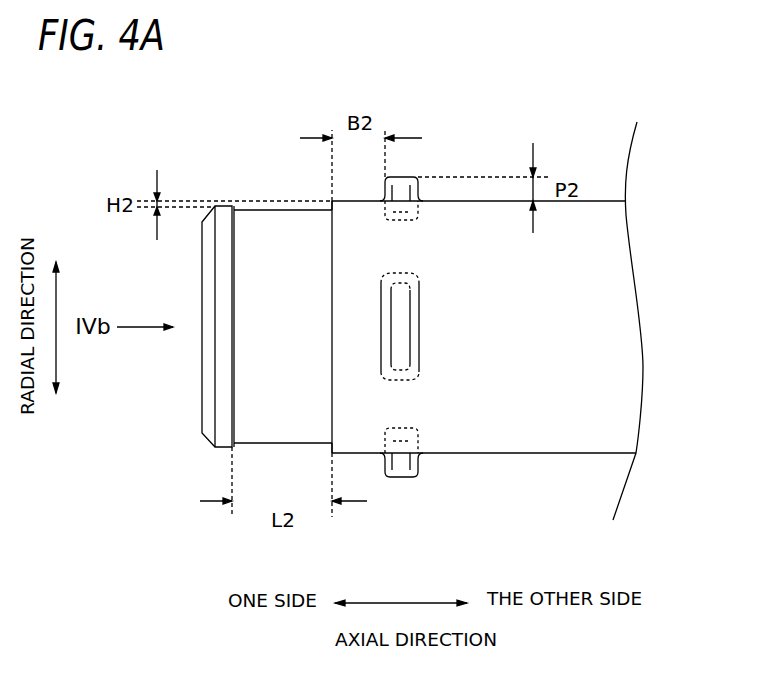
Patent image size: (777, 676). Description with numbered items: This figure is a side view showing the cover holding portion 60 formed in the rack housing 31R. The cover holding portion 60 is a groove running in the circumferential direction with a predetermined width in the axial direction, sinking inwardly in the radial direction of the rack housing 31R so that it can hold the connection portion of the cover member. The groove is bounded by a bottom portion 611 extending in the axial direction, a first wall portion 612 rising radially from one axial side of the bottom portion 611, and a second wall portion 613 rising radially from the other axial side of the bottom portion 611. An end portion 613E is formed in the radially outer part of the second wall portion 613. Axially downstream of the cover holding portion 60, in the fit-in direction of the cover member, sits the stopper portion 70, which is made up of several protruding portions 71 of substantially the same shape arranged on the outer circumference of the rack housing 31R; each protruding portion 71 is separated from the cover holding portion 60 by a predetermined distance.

The cover holding portion 60 is at (215, 178).
The bottom portion 611 is at (265, 209).
The first wall portion 612 is at (240, 372).
The second wall portion 613 is at (332, 412).
The end portion 613E is at (331, 201).
The rack housing 31R is at (533, 114).
The stopper portion 70 is at (432, 481).
The protruding portion 71 is at (418, 208).